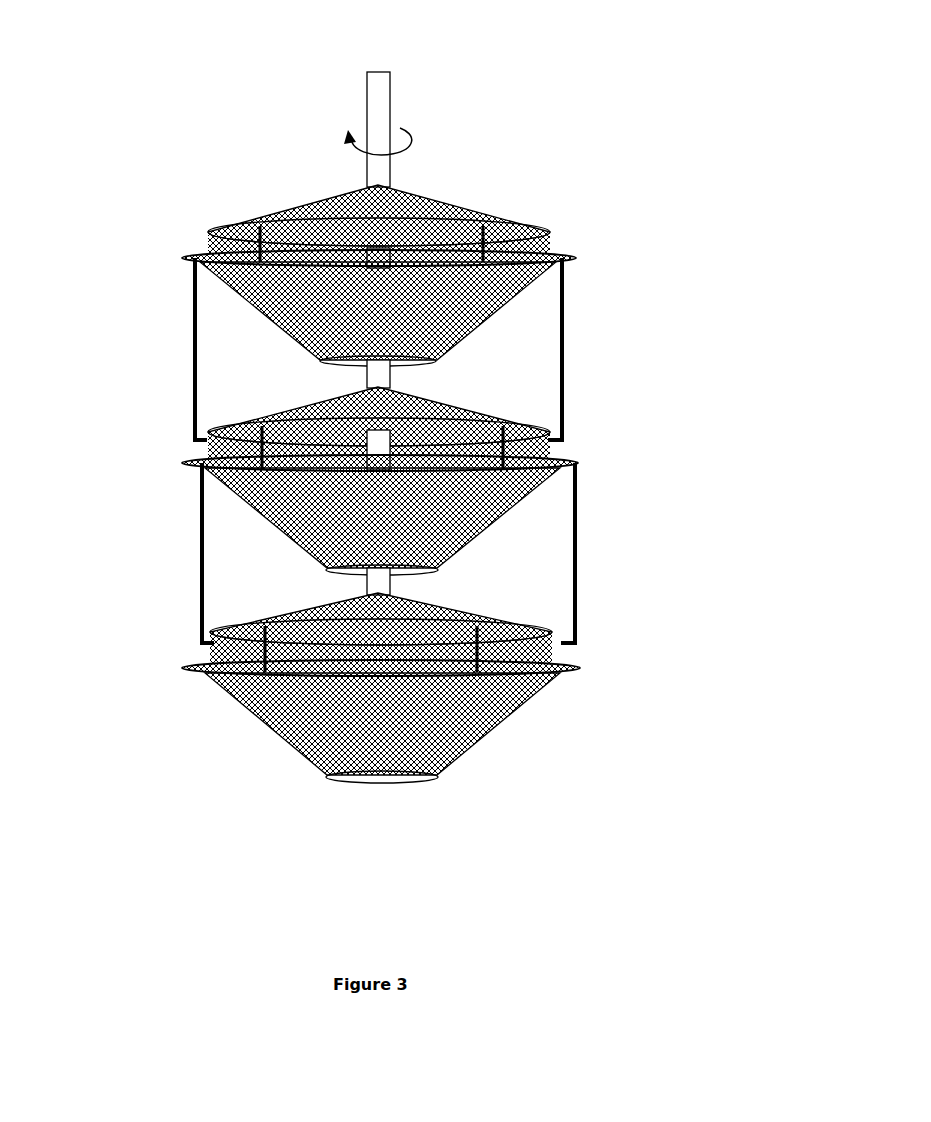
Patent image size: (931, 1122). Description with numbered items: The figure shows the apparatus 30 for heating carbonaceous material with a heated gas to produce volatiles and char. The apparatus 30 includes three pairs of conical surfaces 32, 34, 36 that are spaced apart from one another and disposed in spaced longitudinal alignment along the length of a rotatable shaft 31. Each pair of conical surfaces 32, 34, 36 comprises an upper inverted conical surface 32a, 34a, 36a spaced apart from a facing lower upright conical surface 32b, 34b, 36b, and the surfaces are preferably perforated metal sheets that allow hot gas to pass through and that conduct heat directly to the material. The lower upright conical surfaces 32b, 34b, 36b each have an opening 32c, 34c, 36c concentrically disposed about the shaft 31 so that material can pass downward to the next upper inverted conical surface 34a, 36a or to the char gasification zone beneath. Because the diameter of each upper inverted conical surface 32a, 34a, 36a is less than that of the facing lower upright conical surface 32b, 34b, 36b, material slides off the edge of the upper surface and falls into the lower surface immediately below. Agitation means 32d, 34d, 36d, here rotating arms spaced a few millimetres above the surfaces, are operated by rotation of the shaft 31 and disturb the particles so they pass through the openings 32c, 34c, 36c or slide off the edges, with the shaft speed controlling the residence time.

The apparatus 30 is at (541, 64).
The rotatable shaft 31 is at (382, 93).
The pair of conical surfaces 32 is at (586, 211).
The upper inverted conical surface 32a is at (458, 202).
The lower upright conical surface 32b is at (265, 298).
The opening 32c is at (325, 364).
The agitation means 32d is at (292, 200).
The pair of conical surfaces 34 is at (609, 417).
The upper inverted conical surface 34a is at (465, 408).
The lower upright conical surface 34b is at (285, 533).
The opening 34c is at (327, 574).
The agitation means 34d is at (330, 395).
The pair of conical surfaces 36 is at (609, 635).
The upper inverted conical surface 36a is at (472, 603).
The lower upright conical surface 36b is at (498, 738).
The opening 36c is at (340, 785).
The agitation means 36d is at (533, 618).